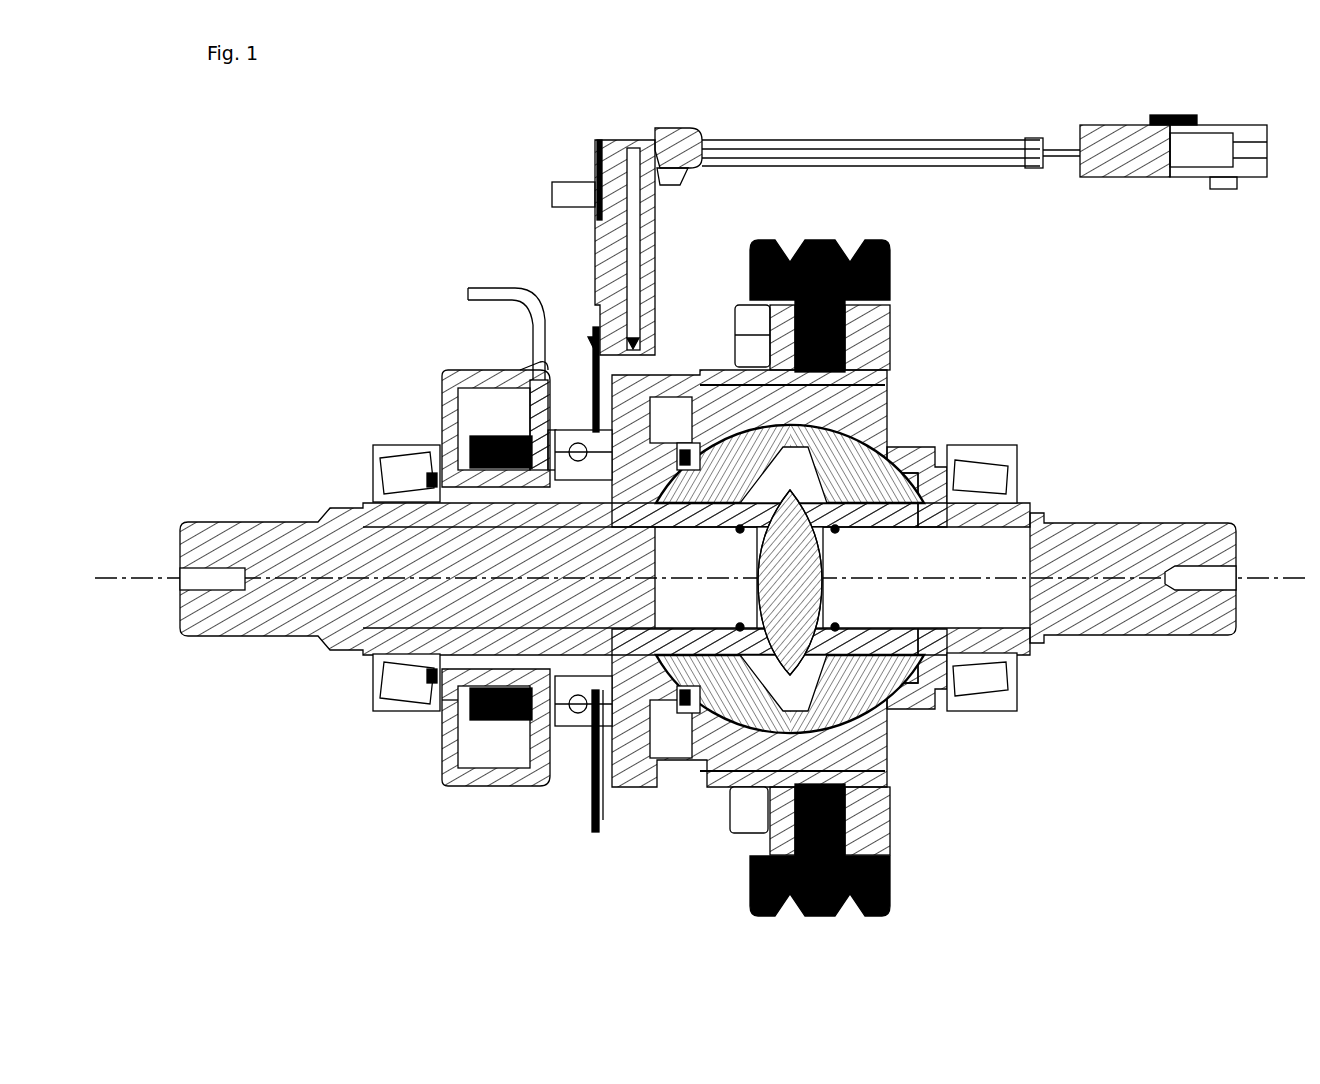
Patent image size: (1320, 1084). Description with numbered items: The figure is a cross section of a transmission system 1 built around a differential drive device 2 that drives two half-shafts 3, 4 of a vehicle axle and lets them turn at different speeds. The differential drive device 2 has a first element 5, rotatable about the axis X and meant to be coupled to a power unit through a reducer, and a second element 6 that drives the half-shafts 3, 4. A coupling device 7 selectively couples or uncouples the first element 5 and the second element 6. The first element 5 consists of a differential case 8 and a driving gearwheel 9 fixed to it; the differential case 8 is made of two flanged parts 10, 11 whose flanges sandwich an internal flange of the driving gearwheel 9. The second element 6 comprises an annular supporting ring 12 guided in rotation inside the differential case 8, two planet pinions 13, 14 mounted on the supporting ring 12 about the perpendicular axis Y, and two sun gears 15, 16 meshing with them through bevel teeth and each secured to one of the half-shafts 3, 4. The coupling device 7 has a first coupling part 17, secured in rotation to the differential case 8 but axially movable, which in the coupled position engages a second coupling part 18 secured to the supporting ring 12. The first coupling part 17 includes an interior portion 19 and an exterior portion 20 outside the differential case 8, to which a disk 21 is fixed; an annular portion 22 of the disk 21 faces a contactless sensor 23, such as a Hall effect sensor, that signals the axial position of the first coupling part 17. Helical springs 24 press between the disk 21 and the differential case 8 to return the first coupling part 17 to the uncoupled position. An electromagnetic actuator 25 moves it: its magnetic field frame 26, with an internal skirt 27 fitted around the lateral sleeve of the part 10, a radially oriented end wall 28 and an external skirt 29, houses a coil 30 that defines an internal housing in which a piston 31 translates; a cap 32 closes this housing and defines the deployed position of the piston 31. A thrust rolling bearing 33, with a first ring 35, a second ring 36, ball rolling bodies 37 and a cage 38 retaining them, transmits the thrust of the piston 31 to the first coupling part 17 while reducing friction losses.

The transmission system 1 is at (400, 237).
The differential drive device 2 is at (928, 400).
The half-shaft 3 is at (325, 560).
The half-shaft 4 is at (1120, 548).
The first element 5 is at (893, 320).
The second element 6 is at (875, 441).
The coupling device 7 is at (567, 798).
The differential case 8 is at (868, 815).
The driving gearwheel 9 is at (847, 877).
The part of differential case 10 is at (760, 305).
The part of differential case 11 is at (893, 318).
The supporting ring 12 is at (853, 748).
The planet pinion 13 is at (900, 440).
The planet pinion 14 is at (757, 717).
The sun gear 15 is at (953, 477).
The sun gear 16 is at (680, 700).
The first coupling part 17 is at (668, 440).
The second coupling part 18 is at (698, 440).
The interior portion 19 is at (668, 700).
The exterior portion 20 is at (598, 835).
The disk 21 is at (591, 328).
The annular portion 22 is at (630, 335).
The sensor 23 is at (670, 138).
The helical spring 24 is at (597, 800).
The actuator 25 is at (463, 833).
The magnetic field frame 26 is at (444, 778).
The internal skirt 27 is at (470, 482).
The end wall 28 is at (445, 418).
The external skirt 29 is at (467, 380).
The coil 30 is at (487, 407).
The piston 31 is at (495, 700).
The cap 32 is at (528, 432).
The thrust rolling bearing 33 is at (558, 740).
The first ring 35 is at (545, 445).
The second ring 36 is at (588, 430).
The rolling bodies 37 is at (566, 440).
The cage 38 is at (560, 712).